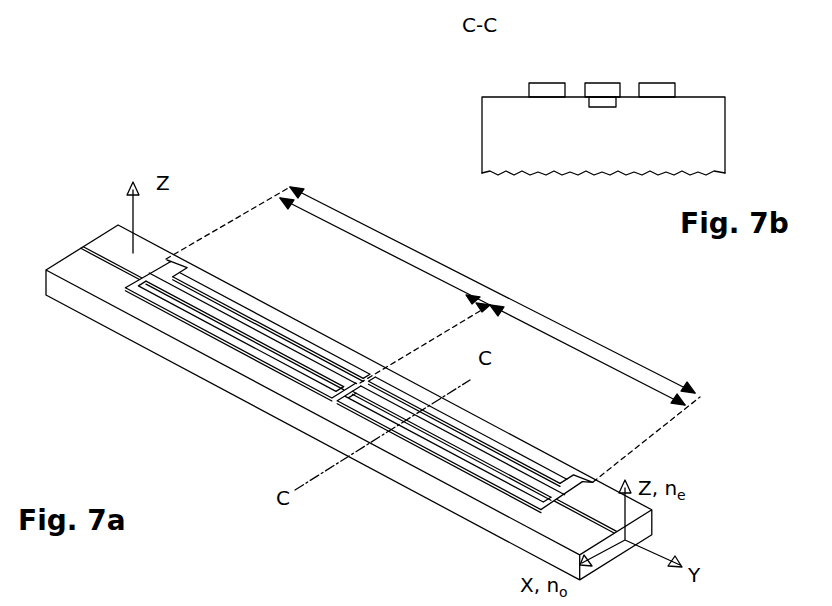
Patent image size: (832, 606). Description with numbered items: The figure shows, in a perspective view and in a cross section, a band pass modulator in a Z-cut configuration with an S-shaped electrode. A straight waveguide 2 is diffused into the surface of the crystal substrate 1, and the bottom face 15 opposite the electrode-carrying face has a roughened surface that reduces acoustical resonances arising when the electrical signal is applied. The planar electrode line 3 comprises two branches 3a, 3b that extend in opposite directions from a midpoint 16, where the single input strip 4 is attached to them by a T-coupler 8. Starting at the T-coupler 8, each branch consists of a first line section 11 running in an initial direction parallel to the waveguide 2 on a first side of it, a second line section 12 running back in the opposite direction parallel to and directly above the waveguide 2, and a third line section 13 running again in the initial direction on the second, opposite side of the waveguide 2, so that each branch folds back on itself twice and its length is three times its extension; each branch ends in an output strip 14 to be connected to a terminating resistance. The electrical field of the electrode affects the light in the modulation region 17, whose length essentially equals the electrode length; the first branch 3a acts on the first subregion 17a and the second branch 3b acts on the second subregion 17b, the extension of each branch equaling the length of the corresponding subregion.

In FIG. 7A, the substrate 1 is at (68, 292).
In FIG. 7B, the substrate 1 is at (484, 100).
In FIG. 7A, the waveguide 2 is at (92, 250).
In FIG. 7B, the waveguide 2 is at (598, 106).
In FIG. 7A, the electrode line 3 is at (310, 318).
In FIG. 7A, the first branch 3a is at (232, 364).
In FIG. 7A, the second branch 3b is at (408, 456).
In FIG. 7A, the input strip 4 is at (326, 416).
In FIG. 7A, the T-coupler 8 is at (322, 395).
In FIG. 7A, the first line section 11 is at (182, 312).
In FIG. 7B, the first line section 11 is at (546, 86).
In FIG. 7A, the second line section 12 is at (218, 317).
In FIG. 7B, the second line section 12 is at (604, 86).
In FIG. 7A, the third line section 13 is at (262, 320).
In FIG. 7B, the third line section 13 is at (658, 86).
In FIG. 7A, the output strip 14 is at (178, 262).
In FIG. 7B, the bottom face 15 is at (650, 176).
In FIG. 7A, the midpoint 16 is at (358, 382).
In FIG. 7A, the modulation region 17 is at (433, 334).
In FIG. 7A, the first subregion 17a is at (385, 255).
In FIG. 7A, the second subregion 17b is at (587, 355).